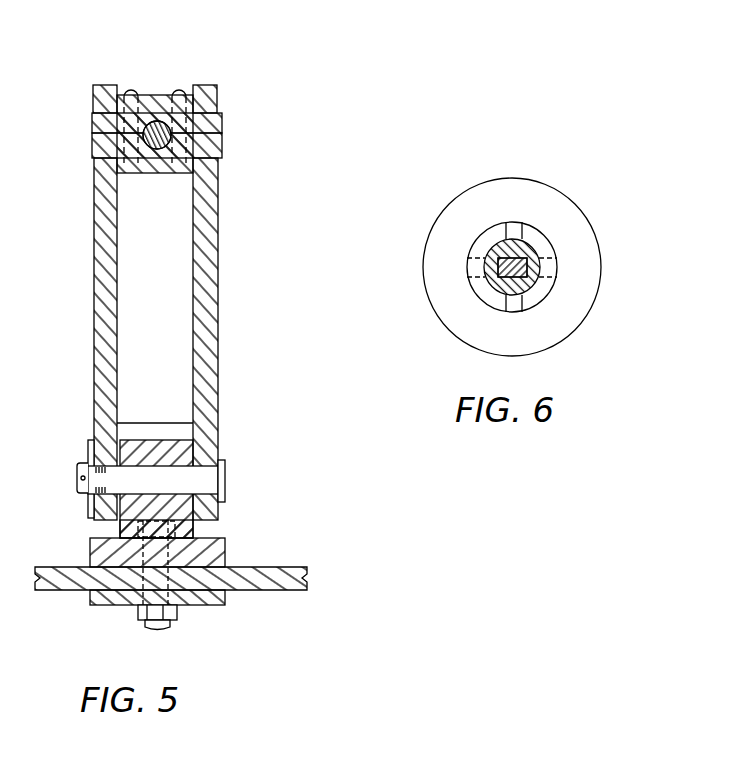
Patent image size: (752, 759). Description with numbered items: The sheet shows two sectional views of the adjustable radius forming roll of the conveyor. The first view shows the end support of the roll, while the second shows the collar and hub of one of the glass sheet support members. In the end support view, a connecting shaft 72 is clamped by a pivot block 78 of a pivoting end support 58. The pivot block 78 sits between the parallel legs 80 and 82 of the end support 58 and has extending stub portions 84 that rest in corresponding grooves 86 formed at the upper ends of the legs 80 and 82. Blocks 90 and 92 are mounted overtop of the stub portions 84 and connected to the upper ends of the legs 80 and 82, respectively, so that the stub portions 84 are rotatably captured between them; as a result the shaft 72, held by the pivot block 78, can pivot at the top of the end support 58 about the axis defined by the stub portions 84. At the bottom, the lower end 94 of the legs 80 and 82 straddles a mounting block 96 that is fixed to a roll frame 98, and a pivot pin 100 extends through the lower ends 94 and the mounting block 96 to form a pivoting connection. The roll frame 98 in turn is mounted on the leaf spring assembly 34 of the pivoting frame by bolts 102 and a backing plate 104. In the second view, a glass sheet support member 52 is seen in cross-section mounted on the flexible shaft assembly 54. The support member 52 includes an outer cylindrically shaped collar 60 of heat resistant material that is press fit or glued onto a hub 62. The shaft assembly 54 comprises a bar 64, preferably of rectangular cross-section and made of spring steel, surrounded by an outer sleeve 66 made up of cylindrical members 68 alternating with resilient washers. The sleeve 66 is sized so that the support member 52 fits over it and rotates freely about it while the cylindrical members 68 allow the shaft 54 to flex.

In FIG. 5, the leaf spring assembly 34 is at (305, 577).
In FIG. 6, the glass sheet support member 52 is at (620, 180).
In FIG. 6, the flexible shaft assembly 54 is at (500, 247).
In FIG. 5, the pivoting end support 58 is at (52, 252).
In FIG. 6, the collar 60 is at (578, 201).
In FIG. 6, the hub 62 is at (548, 243).
In FIG. 6, the bar 64 is at (508, 278).
In FIG. 6, the outer sleeve 66 is at (488, 281).
In FIG. 6, the cylindrical members 68 is at (520, 289).
In FIG. 5, the connecting shaft 72 is at (158, 121).
In FIG. 5, the pivot block 78 is at (135, 95).
In FIG. 5, the leg 80 is at (94, 330).
In FIG. 5, the leg 82 is at (218, 345).
In FIG. 5, the stub portion 84 is at (222, 119).
In FIG. 5, the groove 86 is at (94, 134).
In FIG. 5, the block 90 is at (110, 85).
In FIG. 5, the block 92 is at (207, 85).
In FIG. 5, the lower end 94 is at (218, 440).
In FIG. 5, the mounting block 96 is at (195, 526).
In FIG. 5, the roll frame 98 is at (225, 556).
In FIG. 5, the pivot pin 100 is at (77, 480).
In FIG. 5, the bolt 102 is at (138, 626).
In FIG. 5, the backing plate 104 is at (225, 598).